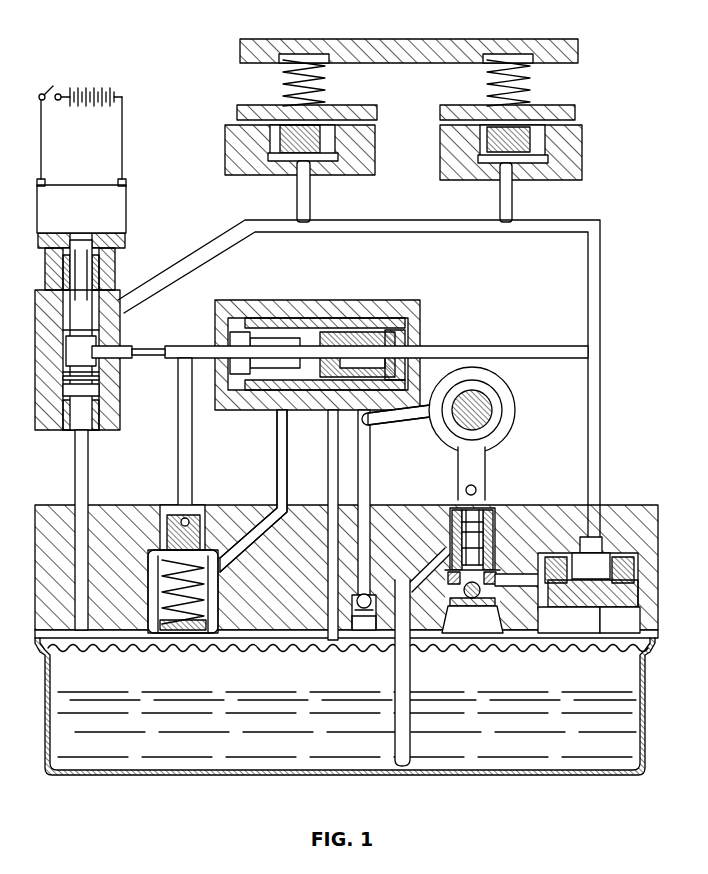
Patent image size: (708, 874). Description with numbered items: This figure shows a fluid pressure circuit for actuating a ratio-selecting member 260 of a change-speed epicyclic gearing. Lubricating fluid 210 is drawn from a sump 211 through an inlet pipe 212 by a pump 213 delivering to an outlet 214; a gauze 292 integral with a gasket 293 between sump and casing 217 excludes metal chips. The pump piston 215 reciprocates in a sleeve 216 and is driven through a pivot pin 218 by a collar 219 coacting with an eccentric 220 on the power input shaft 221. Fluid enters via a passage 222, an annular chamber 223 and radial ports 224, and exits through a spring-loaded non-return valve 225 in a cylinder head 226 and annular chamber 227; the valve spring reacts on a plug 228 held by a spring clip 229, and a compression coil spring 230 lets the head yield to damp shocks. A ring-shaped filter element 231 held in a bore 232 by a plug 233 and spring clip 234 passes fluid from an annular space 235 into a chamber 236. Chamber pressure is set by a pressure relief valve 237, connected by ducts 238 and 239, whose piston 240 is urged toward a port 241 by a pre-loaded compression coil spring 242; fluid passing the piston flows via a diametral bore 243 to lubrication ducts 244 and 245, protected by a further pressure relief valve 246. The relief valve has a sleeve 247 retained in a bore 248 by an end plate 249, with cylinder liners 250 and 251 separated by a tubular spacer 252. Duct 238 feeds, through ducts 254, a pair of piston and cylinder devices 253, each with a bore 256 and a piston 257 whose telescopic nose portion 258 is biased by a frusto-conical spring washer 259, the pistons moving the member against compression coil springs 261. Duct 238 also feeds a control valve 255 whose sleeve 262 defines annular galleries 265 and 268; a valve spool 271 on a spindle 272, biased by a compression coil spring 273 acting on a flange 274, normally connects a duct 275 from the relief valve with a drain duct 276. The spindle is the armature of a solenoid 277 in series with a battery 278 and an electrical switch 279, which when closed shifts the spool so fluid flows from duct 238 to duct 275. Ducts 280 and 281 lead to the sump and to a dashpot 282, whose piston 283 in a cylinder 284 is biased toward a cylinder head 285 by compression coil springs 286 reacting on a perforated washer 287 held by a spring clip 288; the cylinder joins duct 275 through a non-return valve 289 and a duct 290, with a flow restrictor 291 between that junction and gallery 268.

The lubricating fluid 210 is at (253, 753).
The sump 211 is at (298, 775).
The inlet pipe 212 is at (394, 741).
The pump 213 is at (433, 503).
The outlet 214 is at (593, 530).
The piston 215 is at (481, 500).
The sleeve 216 is at (432, 510).
The casing 217 is at (562, 53).
The pivot pin 218 is at (478, 487).
The collar 219 is at (496, 383).
The eccentric 220 is at (489, 430).
The power input shaft 221 is at (484, 404).
The passage 222 is at (415, 660).
The annular chamber 223 is at (495, 514).
The radial ports 224 is at (447, 575).
The spring-loaded non-return valve 225 is at (453, 512).
The cylinder head 226 is at (549, 557).
The annular chamber 227 is at (502, 583).
The plug 228 is at (497, 572).
The spring clip 229 is at (497, 608).
The compression coil spring 230 is at (472, 619).
The ring-shaped filter element 231 is at (634, 555).
The bore 232 is at (553, 600).
The plug 233 is at (590, 586).
The spring clip 234 is at (623, 621).
The annular space 235 is at (569, 620).
The chamber 236 is at (600, 553).
The pressure relief valve 237 is at (433, 292).
The duct 238 is at (227, 239).
The duct 239 is at (497, 356).
The piston 240 is at (363, 330).
The port 241 is at (425, 318).
The pre-loaded compression coil spring 242 is at (233, 304).
The diametral bore 243 is at (378, 325).
The duct 244 is at (363, 440).
The duct 245 is at (405, 421).
The pressure relief valve 246 is at (354, 618).
The sleeve 247 is at (258, 318).
The bore 248 is at (277, 447).
The end plate 249 is at (243, 402).
The cylinder liner 250 is at (293, 338).
The cylinder liner 251 is at (323, 405).
The tubular spacer 252 is at (316, 318).
The fluid pressure operable piston and cylinder device 253 is at (450, 126).
The ducts 254 is at (297, 193).
The control valve 255 is at (63, 437).
The bore 256 is at (279, 155).
The piston 257 is at (236, 135).
The telescopic nose portion 258 is at (330, 108).
The frusto-conical spring washer 259 is at (322, 150).
The ratio-selecting member 260 is at (272, 108).
The compression coil springs 261 is at (300, 62).
The sleeve 262 is at (110, 400).
The annular gallery 265 is at (103, 316).
The annular gallery 268 is at (110, 380).
The valve spool 271 is at (120, 345).
The spindle 272 is at (100, 288).
The compression coil spring 273 is at (112, 260).
The flange 274 is at (118, 241).
The duct 275 is at (184, 350).
The duct 276 is at (88, 481).
The solenoid 277 is at (67, 218).
The battery 278 is at (104, 92).
The electrical switch 279 is at (46, 92).
The duct 280 is at (330, 504).
The duct 281 is at (277, 471).
The dashpot 282 is at (181, 648).
The piston 283 is at (213, 560).
The cylinder 284 is at (143, 605).
The cylinder head 285 is at (172, 506).
The compression coil springs 286 is at (203, 590).
The perforated washer 287 is at (162, 632).
The spring clip 288 is at (150, 625).
The non-return valve 289 is at (190, 518).
The duct 290 is at (180, 444).
The flow restrictor 291 is at (143, 358).
The gauze 292 is at (393, 625).
The gasket 293 is at (636, 612).